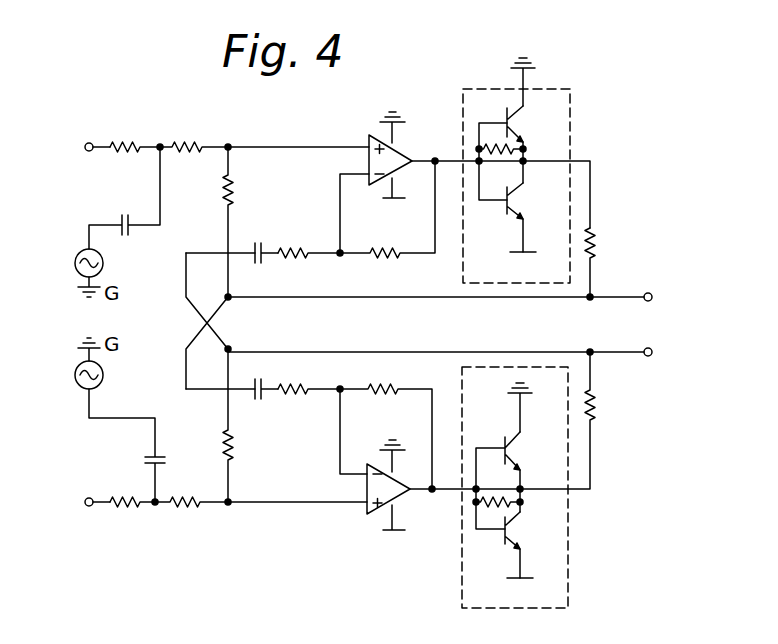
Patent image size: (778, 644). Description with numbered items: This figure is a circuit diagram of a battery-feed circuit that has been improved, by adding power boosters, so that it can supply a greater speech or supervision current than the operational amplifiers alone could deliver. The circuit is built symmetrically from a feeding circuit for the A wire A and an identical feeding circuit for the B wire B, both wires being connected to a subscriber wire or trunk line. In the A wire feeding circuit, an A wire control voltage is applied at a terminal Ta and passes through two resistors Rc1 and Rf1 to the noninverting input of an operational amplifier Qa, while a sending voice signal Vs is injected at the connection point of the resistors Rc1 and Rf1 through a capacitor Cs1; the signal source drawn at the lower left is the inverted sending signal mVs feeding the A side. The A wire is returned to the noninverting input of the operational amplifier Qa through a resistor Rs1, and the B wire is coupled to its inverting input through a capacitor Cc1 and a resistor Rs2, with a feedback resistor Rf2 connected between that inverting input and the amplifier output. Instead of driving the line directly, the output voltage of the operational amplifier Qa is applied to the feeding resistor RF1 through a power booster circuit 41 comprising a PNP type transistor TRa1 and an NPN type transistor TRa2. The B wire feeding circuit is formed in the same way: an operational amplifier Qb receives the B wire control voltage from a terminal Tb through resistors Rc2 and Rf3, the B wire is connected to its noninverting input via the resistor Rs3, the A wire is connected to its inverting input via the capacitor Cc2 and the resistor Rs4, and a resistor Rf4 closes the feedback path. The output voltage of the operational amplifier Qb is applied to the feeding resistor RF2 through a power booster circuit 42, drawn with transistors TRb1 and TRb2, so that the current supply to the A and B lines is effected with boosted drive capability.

The power booster circuit 41 is at (570, 588).
The power booster circuit 42 is at (572, 103).
The terminal Tb is at (78, 148).
The terminal Ta is at (78, 503).
The A wire A is at (449, 353).
The B wire B is at (449, 298).
The resistor Rc2 is at (126, 139).
The resistor Rf3 is at (196, 139).
The capacitor Cc2 is at (119, 213).
The sending voice signal Vs is at (72, 263).
The inverted signal source -Vs mVs is at (72, 375).
The resistor Rs3 is at (236, 186).
The resistor Rs4 is at (296, 261).
The resistor Rf4 is at (388, 261).
The operational amplifier Qb is at (402, 152).
The operational amplifier Qa is at (398, 494).
The transistor TRb1 is at (514, 124).
The transistor TRb2 is at (514, 201).
The PNP type transistor TRa1 is at (520, 531).
The NPN type transistor TRa2 is at (520, 450).
The feeding resistor RF1 is at (598, 406).
The feeding resistor RF2 is at (598, 244).
The capacitor Cs1 is at (180, 462).
The resistor Rc1 is at (126, 510).
The resistor Rf1 is at (188, 510).
The resistor Rs1 is at (235, 444).
The capacitor Cc1 is at (257, 383).
The resistor Rs2 is at (297, 383).
The feedback resistor Rf2 is at (384, 383).